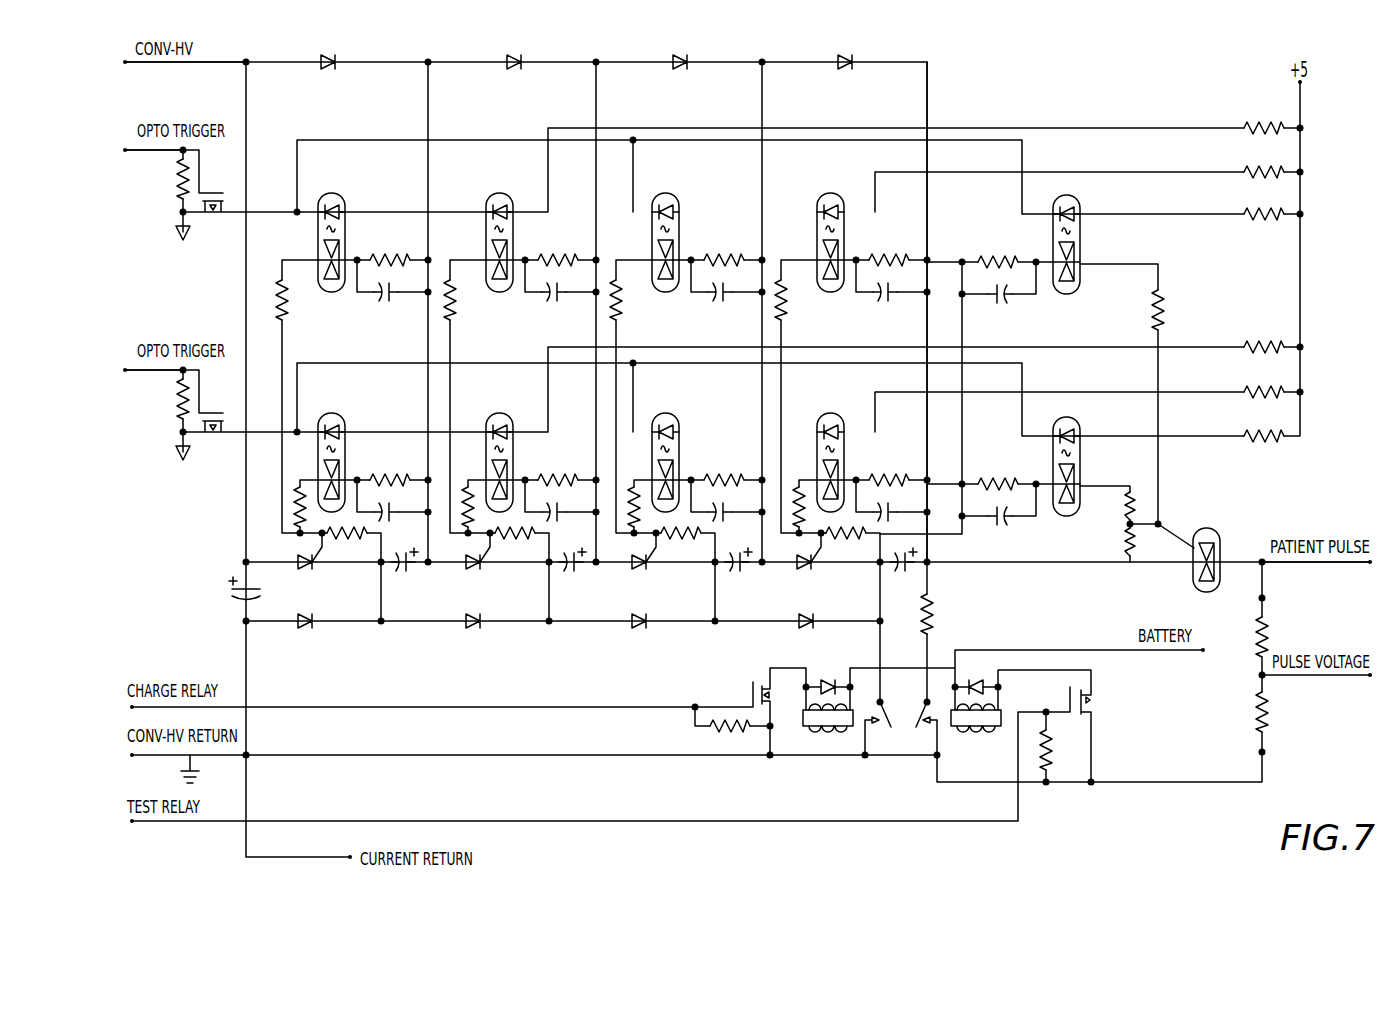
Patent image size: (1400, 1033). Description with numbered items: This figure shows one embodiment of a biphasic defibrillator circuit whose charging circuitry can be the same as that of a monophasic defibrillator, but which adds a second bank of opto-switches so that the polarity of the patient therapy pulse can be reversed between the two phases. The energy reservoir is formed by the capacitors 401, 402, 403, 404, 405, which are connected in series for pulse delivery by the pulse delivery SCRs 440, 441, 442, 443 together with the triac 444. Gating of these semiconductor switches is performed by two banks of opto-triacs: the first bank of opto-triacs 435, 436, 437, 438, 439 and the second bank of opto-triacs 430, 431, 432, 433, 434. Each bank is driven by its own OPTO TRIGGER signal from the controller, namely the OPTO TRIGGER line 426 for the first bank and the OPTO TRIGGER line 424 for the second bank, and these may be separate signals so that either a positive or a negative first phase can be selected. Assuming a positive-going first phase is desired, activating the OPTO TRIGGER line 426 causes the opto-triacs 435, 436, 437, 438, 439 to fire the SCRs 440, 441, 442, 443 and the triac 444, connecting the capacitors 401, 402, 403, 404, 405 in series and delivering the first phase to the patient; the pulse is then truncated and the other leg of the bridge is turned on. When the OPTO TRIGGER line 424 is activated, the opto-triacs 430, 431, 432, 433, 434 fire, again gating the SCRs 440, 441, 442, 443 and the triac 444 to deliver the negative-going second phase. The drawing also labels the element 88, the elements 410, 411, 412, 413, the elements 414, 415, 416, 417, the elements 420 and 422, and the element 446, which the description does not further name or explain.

The converter high voltage input line 88 is at (188, 66).
The OPTO TRIGGER signal 424 is at (163, 154).
The OPTO TRIGGER signal 426 is at (163, 374).
The capacitor 401 is at (232, 590).
The capacitor 402 is at (406, 573).
The capacitor 403 is at (574, 573).
The capacitor 404 is at (740, 573).
The capacitor 405 is at (899, 573).
The charging diode 410 is at (329, 70).
The charging diode 411 is at (515, 70).
The charging diode 412 is at (681, 70).
The charging diode 413 is at (846, 70).
The diode 414 is at (307, 627).
The diode 415 is at (475, 627).
The diode 416 is at (641, 627).
The diode 417 is at (808, 627).
The charge relay 420 is at (837, 728).
The test relay 422 is at (963, 728).
The opto-triac 430 is at (331, 193).
The opto-triac 431 is at (499, 193).
The opto-triac 432 is at (665, 193).
The opto-triac 433 is at (830, 193).
The opto-triac 434 is at (1068, 295).
The opto-triac 435 is at (331, 413).
The opto-triac 436 is at (499, 413).
The opto-triac 437 is at (665, 413).
The opto-triac 438 is at (830, 413).
The opto-triac 439 is at (1068, 516).
The SCR 440 is at (311, 568).
The SCR 441 is at (479, 568).
The SCR 442 is at (645, 568).
The SCR 443 is at (810, 568).
The triac 444 is at (1206, 529).
The patient pulse output 446 is at (1300, 566).